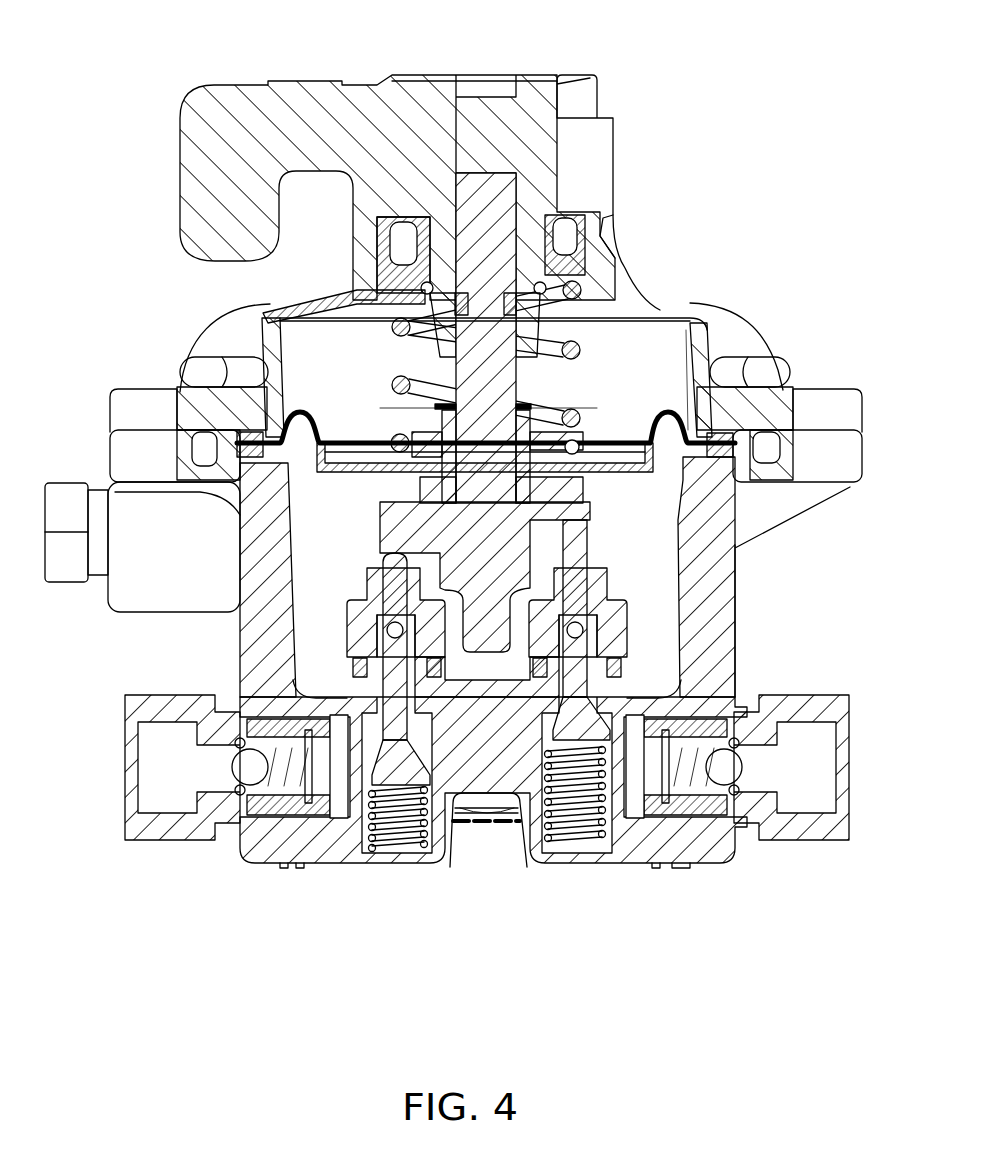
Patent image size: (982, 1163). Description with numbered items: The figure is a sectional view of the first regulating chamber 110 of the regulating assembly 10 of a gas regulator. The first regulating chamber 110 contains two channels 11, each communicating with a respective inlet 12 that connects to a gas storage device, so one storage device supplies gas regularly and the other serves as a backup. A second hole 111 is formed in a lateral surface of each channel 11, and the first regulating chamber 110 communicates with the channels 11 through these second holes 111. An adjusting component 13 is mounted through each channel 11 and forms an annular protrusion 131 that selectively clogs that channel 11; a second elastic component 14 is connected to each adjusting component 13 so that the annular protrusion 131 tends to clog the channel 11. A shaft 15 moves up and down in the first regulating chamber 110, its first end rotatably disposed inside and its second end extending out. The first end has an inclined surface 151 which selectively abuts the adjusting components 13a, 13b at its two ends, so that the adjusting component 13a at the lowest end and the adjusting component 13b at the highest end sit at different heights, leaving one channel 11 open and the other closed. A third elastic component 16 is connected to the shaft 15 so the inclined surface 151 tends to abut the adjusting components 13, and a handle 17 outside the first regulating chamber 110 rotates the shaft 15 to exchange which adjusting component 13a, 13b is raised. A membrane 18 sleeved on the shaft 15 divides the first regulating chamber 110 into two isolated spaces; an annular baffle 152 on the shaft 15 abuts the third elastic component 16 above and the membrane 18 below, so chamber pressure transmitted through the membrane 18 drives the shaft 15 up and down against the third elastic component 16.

The regulating assembly 10 is at (738, 608).
The first regulating chamber 110 is at (720, 532).
The channel 11 is at (380, 695).
The second hole 111 is at (393, 630).
The inlet 12 is at (150, 745).
The adjusting component 13 is at (544, 775).
The adjusting component 13a is at (392, 560).
The adjusting component 13b is at (575, 553).
The annular protrusion 131 is at (362, 770).
The second elastic component 14 is at (397, 843).
The shaft 15 is at (497, 197).
The inclined surface 151 is at (598, 528).
The baffle 152 is at (600, 440).
The third elastic component 16 is at (400, 385).
The handle 17 is at (323, 93).
The membrane 18 is at (675, 410).